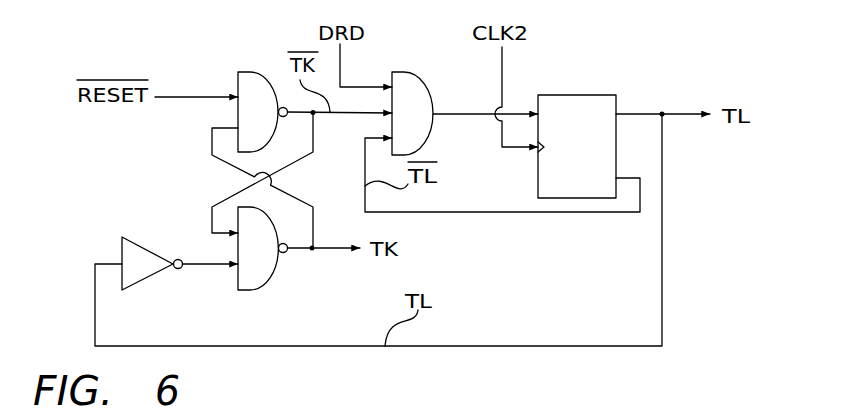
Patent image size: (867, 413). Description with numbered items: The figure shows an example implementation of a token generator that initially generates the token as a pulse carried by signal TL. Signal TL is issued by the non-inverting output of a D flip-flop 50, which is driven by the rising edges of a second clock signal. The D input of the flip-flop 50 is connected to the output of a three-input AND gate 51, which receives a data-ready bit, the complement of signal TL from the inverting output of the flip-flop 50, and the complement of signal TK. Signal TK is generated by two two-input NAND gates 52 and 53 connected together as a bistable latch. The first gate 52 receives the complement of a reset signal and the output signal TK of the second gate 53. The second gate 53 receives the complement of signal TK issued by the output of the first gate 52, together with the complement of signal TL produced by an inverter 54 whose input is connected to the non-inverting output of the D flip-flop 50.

The D flip-flop 50 is at (578, 95).
The three-input AND gate 51 is at (407, 72).
The first NAND gate 52 is at (258, 71).
The second NAND gate 53 is at (275, 232).
The inverter 54 is at (157, 236).